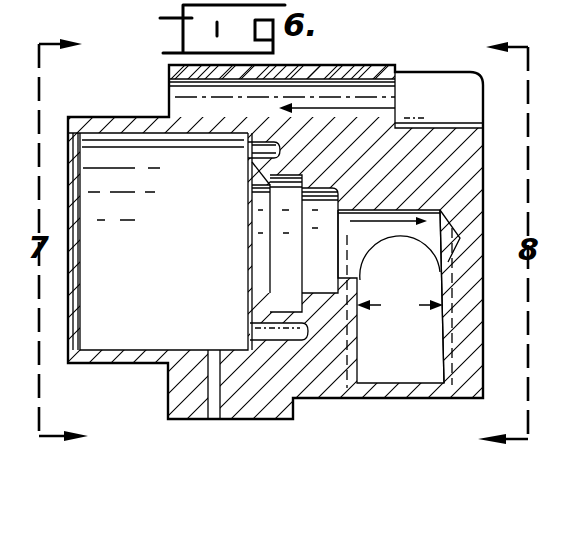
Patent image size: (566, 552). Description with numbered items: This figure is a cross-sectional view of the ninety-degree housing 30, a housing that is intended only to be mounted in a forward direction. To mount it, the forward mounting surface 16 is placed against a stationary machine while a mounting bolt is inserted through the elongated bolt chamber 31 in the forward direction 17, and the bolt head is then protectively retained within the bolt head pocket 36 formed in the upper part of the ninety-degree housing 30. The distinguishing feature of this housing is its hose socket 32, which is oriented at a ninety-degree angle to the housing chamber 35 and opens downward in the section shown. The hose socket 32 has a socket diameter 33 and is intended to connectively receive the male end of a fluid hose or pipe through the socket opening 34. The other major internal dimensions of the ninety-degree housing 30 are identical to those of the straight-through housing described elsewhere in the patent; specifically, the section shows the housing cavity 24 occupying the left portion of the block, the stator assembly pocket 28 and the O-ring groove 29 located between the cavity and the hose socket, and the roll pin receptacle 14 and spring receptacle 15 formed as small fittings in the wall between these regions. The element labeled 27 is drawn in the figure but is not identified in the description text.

The roll pin receptacle 14 is at (248, 151).
The spring receptacle 15 is at (253, 334).
The forward mounting surface 16 is at (168, 72).
The forward direction 17 is at (409, 110).
The housing cavity 24 is at (126, 330).
The inner wall 27 is at (250, 176).
The stator assembly pocket 28 is at (313, 263).
The O-ring groove 29 is at (281, 302).
The 90° housing 30 is at (458, 152).
The elongated bolt chamber 31 is at (346, 93).
The hose socket 32 is at (418, 373).
The socket diameter 33 is at (400, 309).
The socket opening 34 is at (452, 378).
The housing chamber 35 is at (440, 211).
The bolt head pocket 36 is at (475, 118).